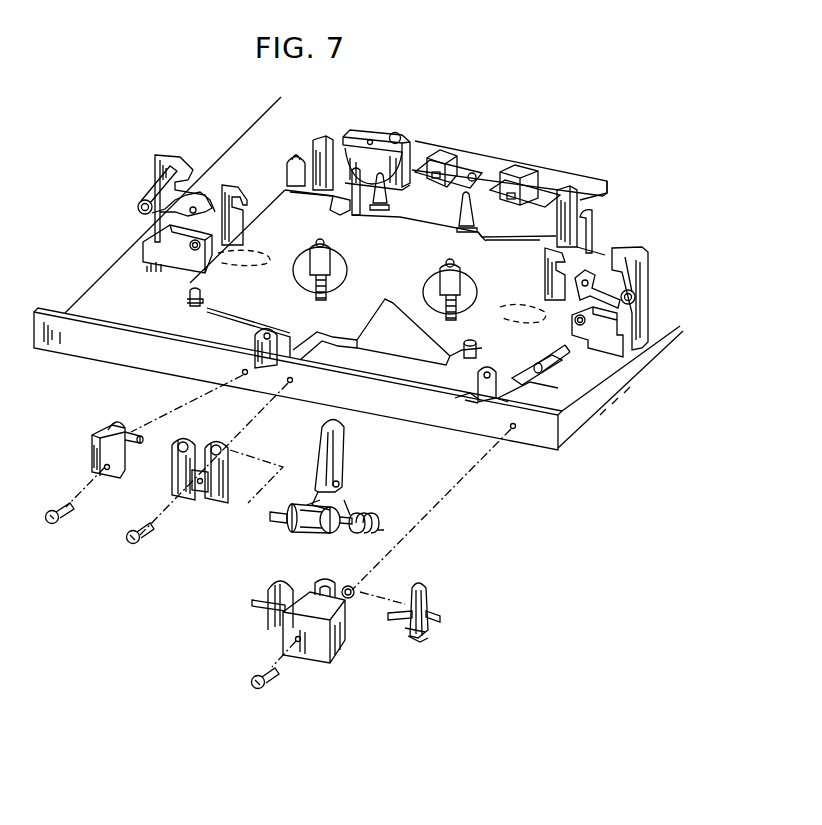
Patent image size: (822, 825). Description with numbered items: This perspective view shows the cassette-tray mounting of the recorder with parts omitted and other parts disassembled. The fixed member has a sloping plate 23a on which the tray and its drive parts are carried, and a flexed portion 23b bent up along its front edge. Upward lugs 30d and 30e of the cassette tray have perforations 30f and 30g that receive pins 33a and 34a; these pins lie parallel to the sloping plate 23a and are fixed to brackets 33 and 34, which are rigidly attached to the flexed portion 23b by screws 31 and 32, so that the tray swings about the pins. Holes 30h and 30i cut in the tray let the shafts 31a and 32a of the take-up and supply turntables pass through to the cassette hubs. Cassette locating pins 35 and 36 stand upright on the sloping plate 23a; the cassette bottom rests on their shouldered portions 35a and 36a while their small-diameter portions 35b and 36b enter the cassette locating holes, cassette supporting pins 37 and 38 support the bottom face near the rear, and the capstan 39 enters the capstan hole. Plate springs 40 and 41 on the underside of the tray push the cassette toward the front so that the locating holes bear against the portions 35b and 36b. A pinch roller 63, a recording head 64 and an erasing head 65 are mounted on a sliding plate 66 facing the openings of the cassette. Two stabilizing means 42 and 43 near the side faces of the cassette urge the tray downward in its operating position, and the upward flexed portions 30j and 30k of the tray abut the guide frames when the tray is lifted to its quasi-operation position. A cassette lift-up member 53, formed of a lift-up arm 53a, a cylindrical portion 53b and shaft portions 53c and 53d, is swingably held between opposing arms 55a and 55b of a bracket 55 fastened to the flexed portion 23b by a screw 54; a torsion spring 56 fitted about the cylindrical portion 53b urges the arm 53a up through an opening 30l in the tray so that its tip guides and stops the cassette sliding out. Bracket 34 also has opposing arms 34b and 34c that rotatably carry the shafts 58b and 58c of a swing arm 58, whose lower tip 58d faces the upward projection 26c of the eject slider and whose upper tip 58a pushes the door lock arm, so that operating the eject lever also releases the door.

The sloping plate 23a is at (598, 412).
The flexed portion 23b is at (402, 403).
The upward projection 26c is at (556, 370).
The upward lug 30d is at (255, 345).
The upward lug 30e is at (506, 392).
The perforation 30f is at (267, 334).
The perforation 30g is at (490, 366).
The hole 30h is at (300, 285).
The hole 30i is at (428, 300).
The upward flexed portion 30j is at (326, 138).
The upward flexed portion 30k is at (570, 188).
The rail 30l is at (380, 305).
The screw 31 is at (50, 524).
The shaft 31a is at (332, 262).
The screw 32 is at (256, 690).
The shaft 32a is at (462, 284).
The bracket 33 is at (94, 452).
The pin 33a is at (138, 442).
The bracket 34 is at (316, 658).
The pin 34a is at (254, 603).
The opposing arm 34b is at (328, 574).
The opposing arm 34c is at (352, 590).
The cassette locating pin 35 is at (424, 218).
The post 35a is at (356, 218).
The small-diameter portion 35b is at (386, 212).
The cassette locating pin 36 is at (484, 229).
The step 36a is at (481, 236).
The small-diameter portion 36b is at (469, 196).
The cassette supporting pin 37 is at (188, 302).
The cassette supporting pin 38 is at (462, 360).
The capstan 39 is at (340, 207).
The plate spring 40 is at (290, 168).
The plate spring 41 is at (592, 222).
The stabilizing means 42 is at (114, 151).
The stabilizing means 43 is at (678, 276).
The cassette lift-up member 53 is at (312, 446).
The cassette lift-up arm 53a is at (344, 452).
The cylindrical portion 53b is at (298, 533).
The shaft portion 53c is at (280, 518).
The shaft portion 53d is at (343, 525).
The screw 54 is at (134, 545).
The bracket 55 is at (196, 492).
The opposing arm 55a is at (184, 440).
The opposing arm 55b is at (218, 442).
The torsion spring 56 is at (365, 525).
The swing arm 58 is at (437, 644).
The upper tip 58a is at (426, 590).
The shaft 58b is at (392, 618).
The shaft 58c is at (440, 617).
The lower tip 58d is at (416, 645).
The pinch roller 63 is at (372, 150).
The recording head 64 is at (448, 160).
The erasing head 65 is at (525, 180).
The sliding plate 66 is at (608, 186).